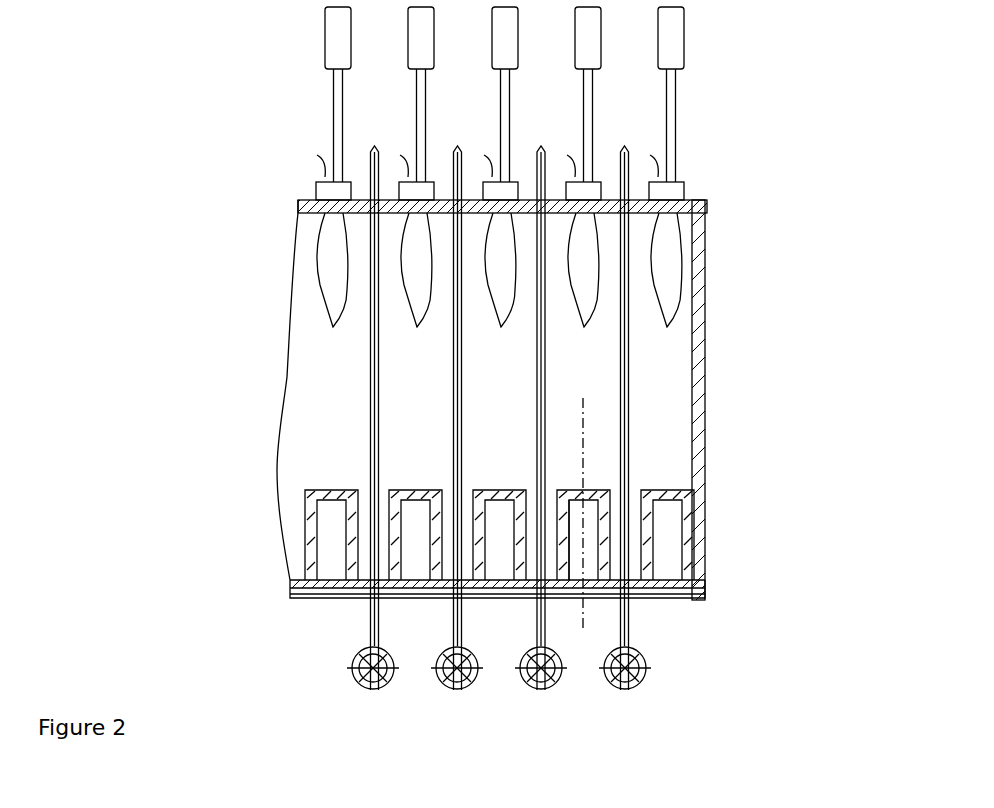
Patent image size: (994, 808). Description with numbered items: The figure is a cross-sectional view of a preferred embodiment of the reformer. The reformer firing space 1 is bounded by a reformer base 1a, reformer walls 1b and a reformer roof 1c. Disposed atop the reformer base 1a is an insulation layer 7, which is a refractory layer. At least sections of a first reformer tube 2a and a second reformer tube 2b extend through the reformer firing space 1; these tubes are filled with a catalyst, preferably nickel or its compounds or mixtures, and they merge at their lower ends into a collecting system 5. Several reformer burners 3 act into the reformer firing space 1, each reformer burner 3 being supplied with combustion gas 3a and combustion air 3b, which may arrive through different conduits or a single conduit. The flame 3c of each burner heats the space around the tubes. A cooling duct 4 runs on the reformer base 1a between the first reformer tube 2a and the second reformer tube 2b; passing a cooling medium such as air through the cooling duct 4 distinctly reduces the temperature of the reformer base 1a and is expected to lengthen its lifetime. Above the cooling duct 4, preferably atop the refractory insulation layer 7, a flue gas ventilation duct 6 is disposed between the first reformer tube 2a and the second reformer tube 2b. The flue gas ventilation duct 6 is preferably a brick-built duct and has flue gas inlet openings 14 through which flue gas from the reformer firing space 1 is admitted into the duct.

The reformer firing space 1 is at (643, 367).
The reformer base 1a is at (610, 596).
The reformer walls 1b is at (707, 423).
The reformer roof 1c is at (302, 195).
The first reformer tube 2a is at (623, 383).
The second reformer tube 2b is at (540, 388).
The reformer burner 3 is at (688, 212).
The combustion gas 3a is at (500, 164).
The combustion air 3b is at (524, 94).
The flame 3c is at (672, 255).
The cooling duct 4 is at (580, 580).
The collecting system 5 is at (528, 672).
The flue gas ventilation duct 6 is at (577, 497).
The insulation layer 7 is at (613, 582).
The flue gas inlet openings 14 is at (310, 552).